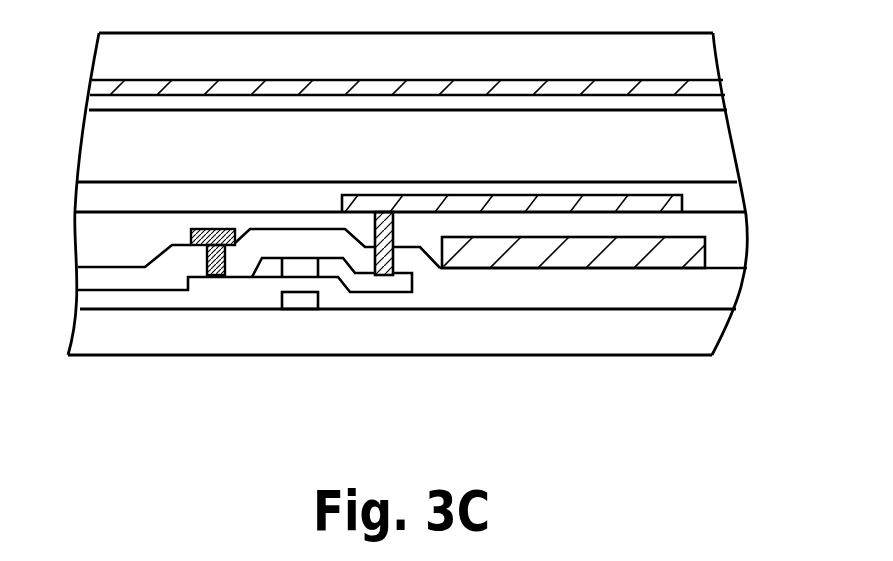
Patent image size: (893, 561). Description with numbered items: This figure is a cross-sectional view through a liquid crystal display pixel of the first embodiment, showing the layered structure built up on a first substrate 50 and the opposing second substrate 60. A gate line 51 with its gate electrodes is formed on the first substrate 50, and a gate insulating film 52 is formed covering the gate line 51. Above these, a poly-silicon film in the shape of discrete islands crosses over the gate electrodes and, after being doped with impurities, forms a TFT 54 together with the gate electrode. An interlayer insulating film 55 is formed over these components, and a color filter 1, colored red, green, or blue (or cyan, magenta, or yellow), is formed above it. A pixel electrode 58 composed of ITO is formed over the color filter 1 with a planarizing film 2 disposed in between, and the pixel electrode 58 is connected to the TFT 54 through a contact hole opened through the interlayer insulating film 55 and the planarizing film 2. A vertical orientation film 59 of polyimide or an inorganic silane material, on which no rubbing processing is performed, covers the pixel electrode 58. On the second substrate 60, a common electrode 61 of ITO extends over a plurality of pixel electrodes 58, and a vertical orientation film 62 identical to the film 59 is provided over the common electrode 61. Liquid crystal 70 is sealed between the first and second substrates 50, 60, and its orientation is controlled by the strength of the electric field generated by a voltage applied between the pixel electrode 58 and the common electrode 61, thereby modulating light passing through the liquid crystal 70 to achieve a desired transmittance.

The color filter 1 is at (690, 253).
The planarizing film 2 is at (723, 233).
The first substrate 50 is at (702, 342).
The gate line 51 is at (297, 302).
The gate insulating film 52 is at (727, 305).
The TFT 54 is at (238, 323).
The interlayer insulating film 55 is at (727, 280).
The pixel electrode 58 is at (683, 202).
The vertical orientation film 59 is at (725, 202).
The second substrate 60 is at (118, 58).
The common electrode 61 is at (112, 88).
The vertical orientation film 62 is at (100, 103).
The liquid crystal 70 is at (105, 140).